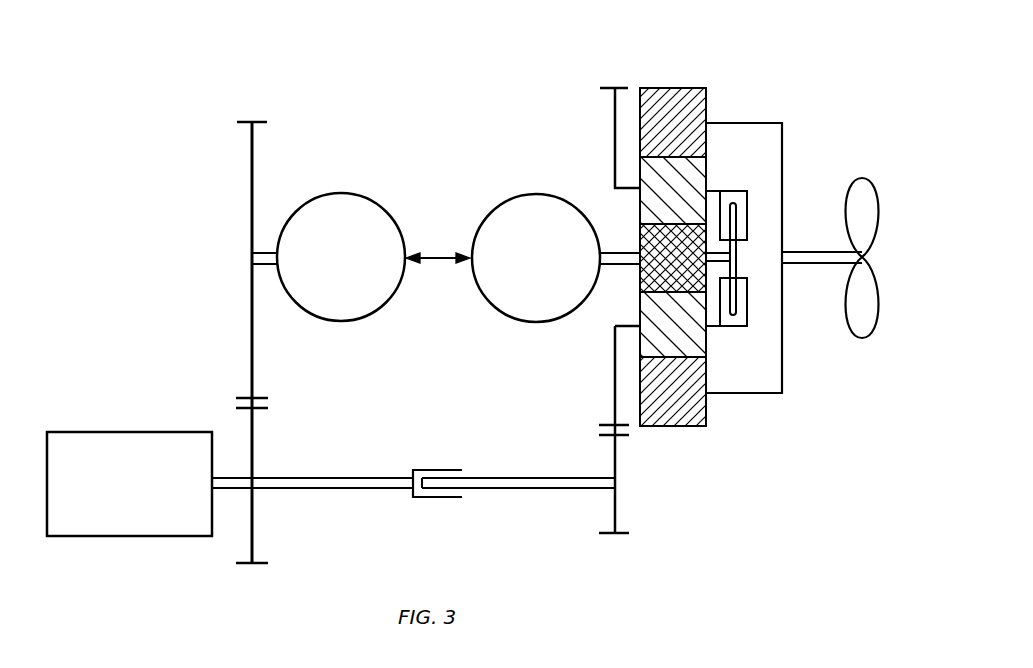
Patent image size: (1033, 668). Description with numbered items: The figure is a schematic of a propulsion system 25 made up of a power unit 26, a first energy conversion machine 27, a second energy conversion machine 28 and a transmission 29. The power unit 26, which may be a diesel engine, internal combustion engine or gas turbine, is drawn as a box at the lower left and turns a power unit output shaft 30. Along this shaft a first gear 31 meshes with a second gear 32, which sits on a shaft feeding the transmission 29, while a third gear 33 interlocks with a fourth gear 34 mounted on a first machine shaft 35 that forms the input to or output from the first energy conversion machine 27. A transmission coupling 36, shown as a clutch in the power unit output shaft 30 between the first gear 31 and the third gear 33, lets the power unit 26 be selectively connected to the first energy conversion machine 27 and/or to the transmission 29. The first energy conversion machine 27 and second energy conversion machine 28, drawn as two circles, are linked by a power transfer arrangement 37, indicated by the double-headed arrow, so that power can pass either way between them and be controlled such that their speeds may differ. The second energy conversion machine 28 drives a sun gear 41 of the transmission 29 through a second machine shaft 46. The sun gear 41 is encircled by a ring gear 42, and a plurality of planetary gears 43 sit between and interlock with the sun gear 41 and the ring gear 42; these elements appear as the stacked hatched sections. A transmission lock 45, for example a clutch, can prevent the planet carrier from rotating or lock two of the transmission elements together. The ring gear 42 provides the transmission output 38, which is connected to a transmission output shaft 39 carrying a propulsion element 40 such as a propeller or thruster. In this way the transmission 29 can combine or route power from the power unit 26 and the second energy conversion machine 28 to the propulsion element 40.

The propulsion system 25 is at (132, 149).
The power unit 26 is at (130, 432).
The first energy conversion machine 27 is at (341, 193).
The second energy conversion machine 28 is at (536, 194).
The transmission 29 is at (705, 68).
The power unit output shaft 30 is at (332, 477).
The first gear 31 is at (616, 509).
The second gear 32 is at (614, 379).
The third gear 33 is at (258, 565).
The fourth gear 34 is at (251, 136).
The first machine shaft 35 is at (263, 253).
The transmission coupling 36 is at (437, 469).
The power transfer arrangement 37 is at (437, 256).
The transmission output 38 is at (745, 122).
The transmission output shaft 39 is at (813, 251).
The propulsion element 40 is at (862, 178).
The sun gear 41 is at (599, 241).
The ring gear 42 is at (672, 88).
The planetary gears 43 is at (640, 205).
The transmission lock 45 is at (730, 190).
The second machine shaft 46 is at (620, 268).